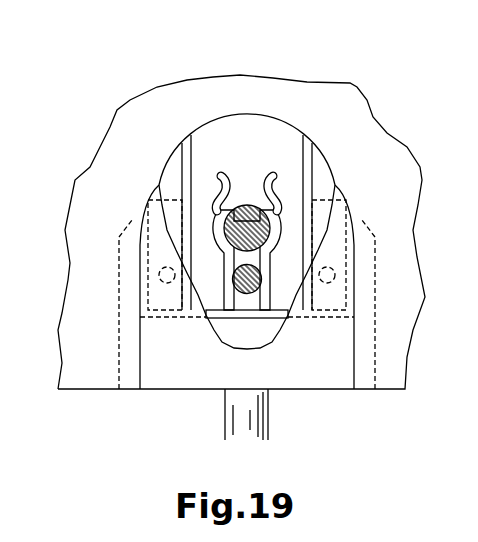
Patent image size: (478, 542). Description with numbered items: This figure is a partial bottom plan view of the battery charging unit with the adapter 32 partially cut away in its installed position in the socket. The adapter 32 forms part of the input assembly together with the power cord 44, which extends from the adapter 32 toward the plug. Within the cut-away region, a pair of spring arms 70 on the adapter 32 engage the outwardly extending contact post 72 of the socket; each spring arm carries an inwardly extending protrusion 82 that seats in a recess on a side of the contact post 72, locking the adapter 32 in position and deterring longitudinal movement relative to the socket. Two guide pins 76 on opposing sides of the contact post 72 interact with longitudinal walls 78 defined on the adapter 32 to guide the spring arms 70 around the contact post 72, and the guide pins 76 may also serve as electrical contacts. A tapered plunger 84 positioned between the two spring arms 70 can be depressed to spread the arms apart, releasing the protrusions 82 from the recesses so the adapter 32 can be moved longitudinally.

The adapter 32 is at (177, 367).
The power cord 44 is at (240, 422).
The spring arms 70 is at (220, 180).
The contact post 72 is at (252, 231).
The guide pins 76 is at (167, 270).
The longitudinal walls 78 is at (187, 167).
The protrusions 82 is at (233, 215).
The plunger 84 is at (243, 285).